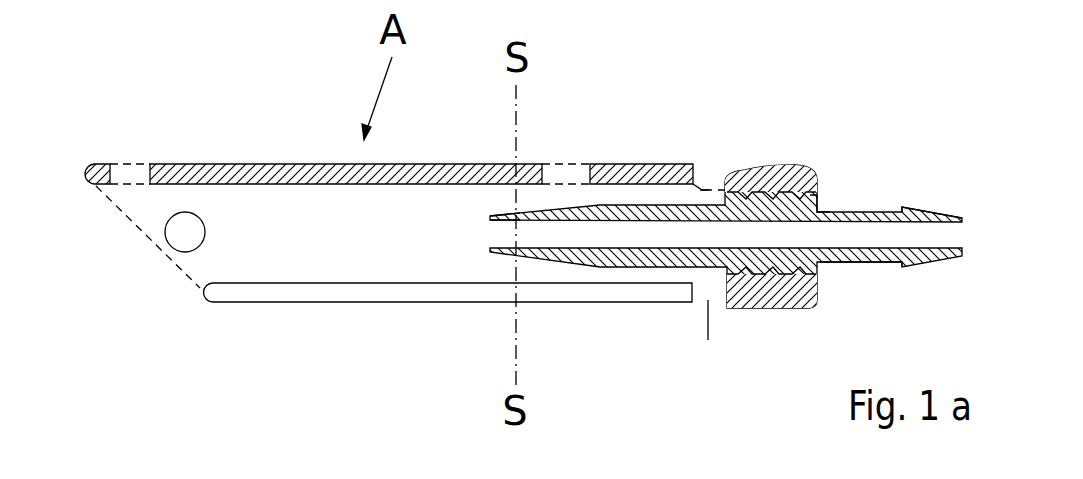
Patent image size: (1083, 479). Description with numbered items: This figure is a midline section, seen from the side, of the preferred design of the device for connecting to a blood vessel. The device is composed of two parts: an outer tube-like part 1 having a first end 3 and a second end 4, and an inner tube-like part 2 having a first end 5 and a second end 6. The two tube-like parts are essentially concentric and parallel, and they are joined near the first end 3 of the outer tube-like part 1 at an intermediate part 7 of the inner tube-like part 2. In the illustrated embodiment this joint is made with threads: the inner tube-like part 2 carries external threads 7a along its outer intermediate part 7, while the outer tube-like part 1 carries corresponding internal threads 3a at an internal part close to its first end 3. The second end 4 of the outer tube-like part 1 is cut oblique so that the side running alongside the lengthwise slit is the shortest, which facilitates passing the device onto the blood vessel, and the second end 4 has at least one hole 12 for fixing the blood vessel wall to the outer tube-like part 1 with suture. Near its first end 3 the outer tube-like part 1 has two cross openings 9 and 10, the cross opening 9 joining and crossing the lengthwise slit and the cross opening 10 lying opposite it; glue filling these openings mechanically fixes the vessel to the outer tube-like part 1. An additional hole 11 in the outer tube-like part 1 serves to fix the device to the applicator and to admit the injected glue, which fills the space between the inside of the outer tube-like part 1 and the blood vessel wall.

The outer tube-like part 1 is at (305, 302).
The inner tube-like part 2 is at (860, 263).
The first end of the outer tube-like part 3 is at (810, 165).
The internal threads 3a is at (760, 196).
The second end of the outer tube-like part 4 is at (150, 242).
The first end of the inner tube-like part 5 is at (935, 207).
The second end of the inner tube-like part 6 is at (503, 217).
The intermediate part of the inner tube-like part 7 is at (822, 205).
The external threads 7a is at (822, 196).
The cross opening 9 is at (706, 342).
The cross opening 10 is at (705, 190).
The hole 11 is at (560, 163).
The hole 12 is at (125, 162).